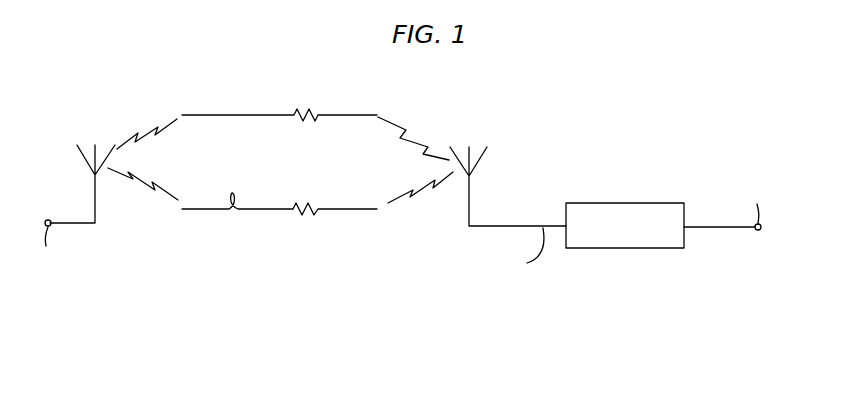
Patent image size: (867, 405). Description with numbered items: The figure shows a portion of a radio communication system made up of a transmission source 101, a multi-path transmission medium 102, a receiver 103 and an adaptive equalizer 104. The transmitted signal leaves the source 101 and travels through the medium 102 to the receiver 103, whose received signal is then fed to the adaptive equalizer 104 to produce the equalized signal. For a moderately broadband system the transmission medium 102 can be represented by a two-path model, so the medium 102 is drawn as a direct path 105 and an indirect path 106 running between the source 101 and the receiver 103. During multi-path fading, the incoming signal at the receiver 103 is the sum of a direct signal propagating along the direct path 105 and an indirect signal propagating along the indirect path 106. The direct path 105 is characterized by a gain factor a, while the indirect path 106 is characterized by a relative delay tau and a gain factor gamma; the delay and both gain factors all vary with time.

The transmission source 101 is at (95, 193).
The multi-path transmission medium 102 is at (282, 92).
The receiver 103 is at (470, 195).
The adaptive equalizer 104 is at (610, 203).
The direct path 105 is at (197, 113).
The indirect path 106 is at (270, 210).